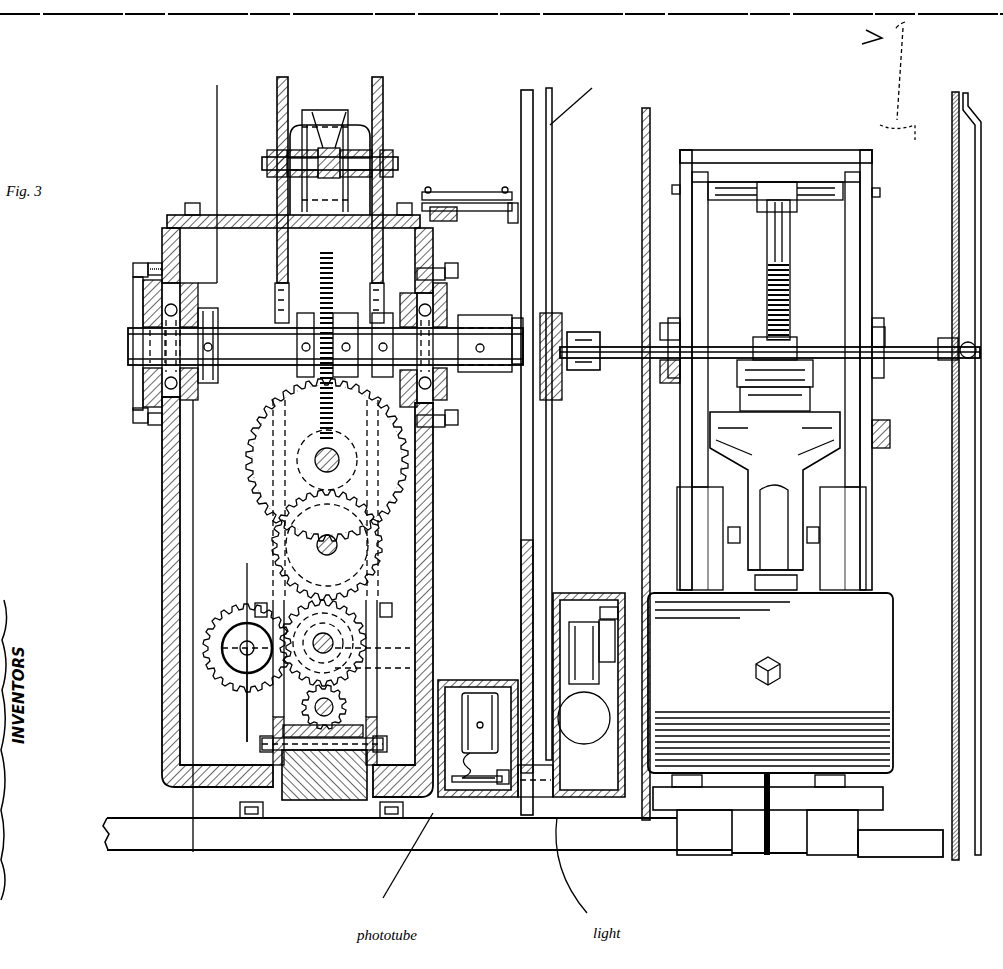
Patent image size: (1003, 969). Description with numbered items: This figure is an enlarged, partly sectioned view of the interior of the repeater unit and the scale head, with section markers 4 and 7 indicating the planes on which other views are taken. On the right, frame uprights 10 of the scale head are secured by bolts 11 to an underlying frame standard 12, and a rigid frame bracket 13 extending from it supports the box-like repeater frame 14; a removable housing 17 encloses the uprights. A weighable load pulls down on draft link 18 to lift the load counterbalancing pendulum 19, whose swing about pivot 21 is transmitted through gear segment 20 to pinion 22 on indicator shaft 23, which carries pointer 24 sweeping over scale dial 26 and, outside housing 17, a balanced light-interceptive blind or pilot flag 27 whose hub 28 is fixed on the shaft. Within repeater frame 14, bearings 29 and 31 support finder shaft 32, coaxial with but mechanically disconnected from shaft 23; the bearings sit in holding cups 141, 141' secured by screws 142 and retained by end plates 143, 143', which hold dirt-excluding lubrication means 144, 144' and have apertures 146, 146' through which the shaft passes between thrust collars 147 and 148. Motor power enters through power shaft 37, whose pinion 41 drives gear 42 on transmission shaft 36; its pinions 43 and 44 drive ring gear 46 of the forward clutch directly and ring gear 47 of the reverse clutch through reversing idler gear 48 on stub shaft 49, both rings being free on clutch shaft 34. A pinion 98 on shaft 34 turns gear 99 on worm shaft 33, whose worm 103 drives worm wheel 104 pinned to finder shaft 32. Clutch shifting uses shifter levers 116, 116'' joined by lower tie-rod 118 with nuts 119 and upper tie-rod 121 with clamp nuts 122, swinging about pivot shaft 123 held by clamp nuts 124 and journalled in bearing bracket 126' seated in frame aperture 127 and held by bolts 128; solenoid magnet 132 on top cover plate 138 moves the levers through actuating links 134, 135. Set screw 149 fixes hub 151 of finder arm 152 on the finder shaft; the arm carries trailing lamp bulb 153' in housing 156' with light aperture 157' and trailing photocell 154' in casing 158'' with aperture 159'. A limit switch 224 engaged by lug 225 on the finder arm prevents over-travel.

The section line 4- 4 is at (206, 107).
The section line 7- 7 is at (238, 579).
The frame uprights 10 is at (700, 251).
The bolts 11 is at (700, 798).
The frame standard 12 is at (525, 837).
The frame bracket 13 is at (478, 765).
The repeater frame 14 is at (163, 497).
The housing 17 is at (642, 172).
The draft link 18 is at (764, 840).
The load counterbalancing pendulum 19 is at (770, 683).
The gear segment 20 is at (767, 300).
The pivot 21 is at (746, 439).
The pinion 22 is at (755, 346).
The indicator shaft 23 is at (904, 350).
The rotary pointer 24 is at (978, 596).
The scale dial 26 is at (952, 493).
The blind or pilot flag 27 is at (550, 541).
The shaft hub 28 is at (562, 312).
The ball bearing 29 is at (192, 398).
The ball bearing 31 is at (395, 312).
The finder shaft 32 is at (325, 346).
The worm shaft 33 is at (333, 455).
The clutch shaft 34 is at (276, 535).
The transmission shaft 36 is at (352, 645).
The power shaft 37 is at (340, 712).
The pinion 41 is at (347, 703).
The gear 42 is at (353, 676).
The pinion 43 is at (350, 635).
The pinion 44 is at (352, 660).
The ring gear 46 is at (382, 527).
The ring gear 47 is at (395, 531).
The reversing idler gear 48 is at (216, 694).
The stub shaft 49 is at (243, 644).
The pinion 98 is at (345, 551).
The gear 99 is at (256, 452).
The worm 103 is at (306, 458).
The worm wheel 104 is at (325, 257).
The shifter lever 116 is at (266, 200).
The shifter lever 116'' is at (360, 200).
The lower tie-rod 118 is at (350, 615).
The nuts 119 is at (266, 598).
The upper tie-rod 121 is at (398, 164).
The clamp nuts 122 is at (272, 159).
The pivot shaft 123 is at (262, 750).
The clamp nuts 124 is at (262, 742).
The bearing bracket 126' is at (324, 784).
The aperture 127 is at (384, 819).
The bolts 128 is at (255, 819).
The solenoid magnet 132 is at (330, 124).
The actuating link 134 is at (308, 119).
The actuating link 135 is at (351, 119).
The top cover plate 138 is at (248, 209).
The holding cup 141 is at (179, 326).
The holding cup 141' is at (415, 329).
The screws 142 is at (133, 418).
The end plate 143 is at (128, 288).
The end plate 143' is at (463, 302).
The dirt excluding and lubrication storing means 144 is at (115, 343).
The dirt excluding and lubrication storing means 144' is at (450, 360).
The aperture 146 is at (128, 387).
The aperture 146' is at (467, 386).
The thrust collar 147 is at (219, 308).
The thrust collar 148 is at (345, 325).
The set screw 149 is at (480, 344).
The hub 151 is at (490, 280).
The finder arm 152 is at (521, 468).
The trailing lamp bulb 153' is at (586, 695).
The trailing photocell 154' is at (485, 713).
The lamp housing 156' is at (589, 683).
The light-passing aperture 157' is at (552, 793).
The casing 158'' is at (464, 800).
The light-passing aperture 159' is at (494, 798).
The limit switch 224 is at (473, 194).
The lug 225 is at (470, 262).